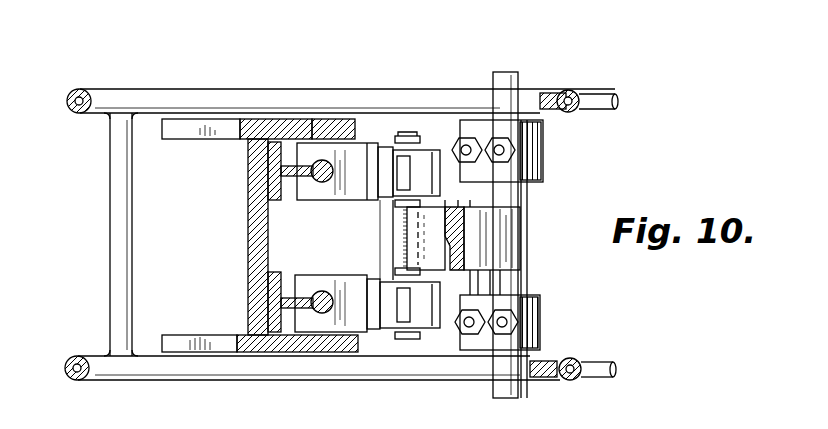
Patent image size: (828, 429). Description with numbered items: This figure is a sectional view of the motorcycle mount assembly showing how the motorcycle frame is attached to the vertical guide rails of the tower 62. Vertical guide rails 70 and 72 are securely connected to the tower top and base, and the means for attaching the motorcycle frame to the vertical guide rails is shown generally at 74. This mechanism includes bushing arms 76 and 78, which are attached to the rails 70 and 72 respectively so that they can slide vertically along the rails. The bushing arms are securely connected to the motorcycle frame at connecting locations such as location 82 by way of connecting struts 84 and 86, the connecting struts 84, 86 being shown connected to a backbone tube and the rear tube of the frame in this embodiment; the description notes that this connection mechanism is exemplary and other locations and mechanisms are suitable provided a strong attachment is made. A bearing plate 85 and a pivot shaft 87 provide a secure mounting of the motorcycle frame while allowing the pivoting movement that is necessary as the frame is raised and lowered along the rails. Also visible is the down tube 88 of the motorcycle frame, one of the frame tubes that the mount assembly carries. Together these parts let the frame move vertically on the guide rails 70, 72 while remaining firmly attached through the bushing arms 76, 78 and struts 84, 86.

The tower 62 is at (246, 241).
The vertical guide rail 70 is at (320, 317).
The vertical guide rail 72 is at (318, 138).
The means for attaching the motorcycle frame to the vertical guide rails 74 is at (407, 78).
The bushing arm 76 is at (357, 313).
The bushing arm 78 is at (345, 153).
The connecting location 82 is at (552, 165).
The connecting strut 84 is at (433, 253).
The bearing plate 85 is at (398, 236).
The connecting strut 86 is at (483, 238).
The pivot shaft 87 is at (405, 140).
The down tube 88 is at (144, 97).